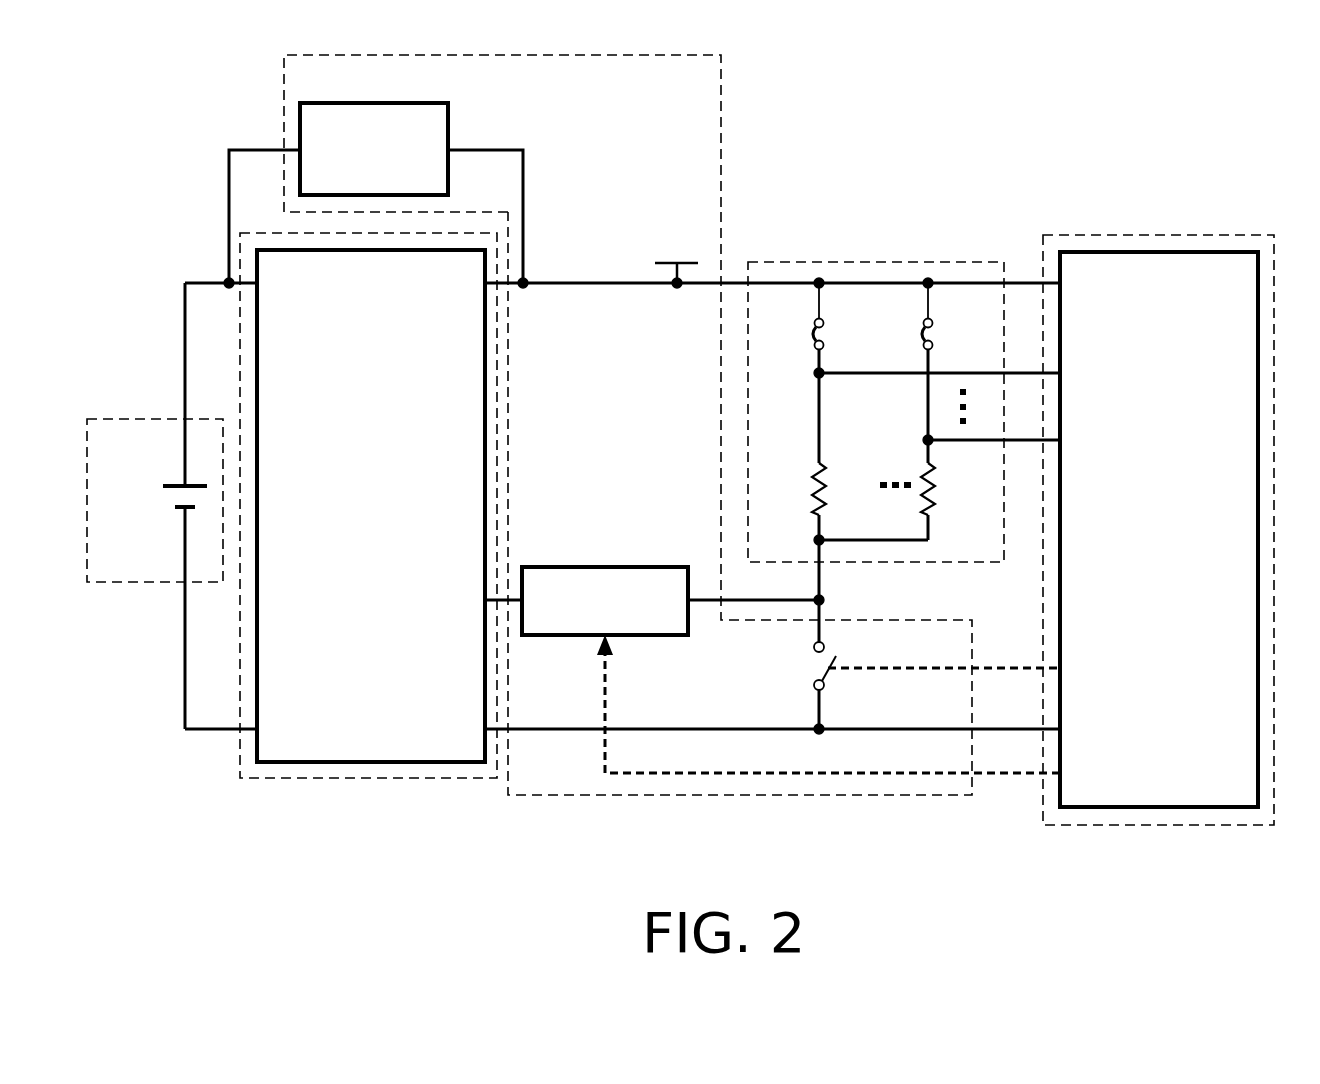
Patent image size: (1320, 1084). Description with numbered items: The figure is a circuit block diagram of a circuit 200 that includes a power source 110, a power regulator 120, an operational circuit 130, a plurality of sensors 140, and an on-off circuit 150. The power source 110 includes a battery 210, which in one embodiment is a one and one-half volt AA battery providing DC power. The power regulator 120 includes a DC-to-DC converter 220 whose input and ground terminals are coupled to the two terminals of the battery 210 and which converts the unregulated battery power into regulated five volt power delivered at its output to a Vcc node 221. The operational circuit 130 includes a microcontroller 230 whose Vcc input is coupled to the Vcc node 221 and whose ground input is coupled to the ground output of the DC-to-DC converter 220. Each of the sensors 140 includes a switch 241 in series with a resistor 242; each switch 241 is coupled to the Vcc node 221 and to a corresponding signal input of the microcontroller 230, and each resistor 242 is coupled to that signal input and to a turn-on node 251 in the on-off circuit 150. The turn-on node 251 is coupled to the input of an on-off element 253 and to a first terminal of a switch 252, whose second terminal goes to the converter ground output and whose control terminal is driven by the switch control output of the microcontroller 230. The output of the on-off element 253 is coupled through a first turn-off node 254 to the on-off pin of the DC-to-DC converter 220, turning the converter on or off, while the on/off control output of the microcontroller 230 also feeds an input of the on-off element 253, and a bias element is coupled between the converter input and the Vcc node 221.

The circuit 200 is at (1200, 141).
The power source 110 is at (158, 585).
The battery 210 is at (177, 482).
The power regulator 120 is at (365, 780).
The DC-to-DC converter 220 is at (407, 672).
The switch 252 is at (425, 103).
The Vcc node 221 is at (677, 290).
The on-off circuit 150 is at (667, 795).
The first turn-off node 254 is at (515, 597).
The on-off element 253 is at (1003, 823).
The turn-on node 251 is at (812, 606).
The sensors 140 is at (877, 262).
The switch 241 is at (814, 322).
The resistor 242 is at (813, 470).
The operational circuit 130 is at (1157, 827).
The microcontroller 230 is at (1200, 620).